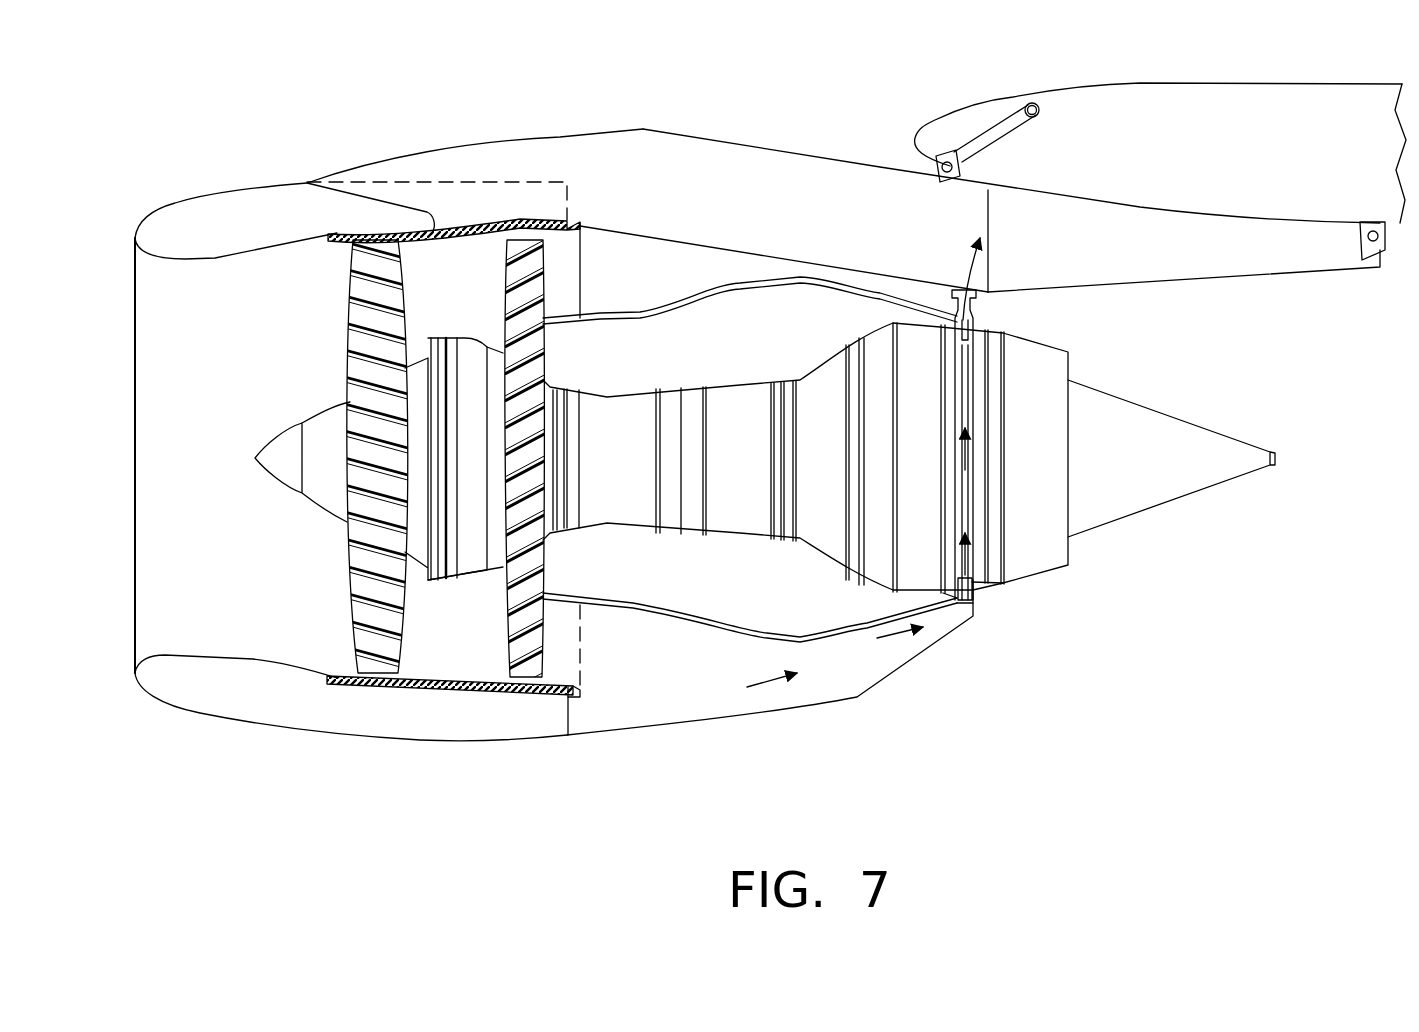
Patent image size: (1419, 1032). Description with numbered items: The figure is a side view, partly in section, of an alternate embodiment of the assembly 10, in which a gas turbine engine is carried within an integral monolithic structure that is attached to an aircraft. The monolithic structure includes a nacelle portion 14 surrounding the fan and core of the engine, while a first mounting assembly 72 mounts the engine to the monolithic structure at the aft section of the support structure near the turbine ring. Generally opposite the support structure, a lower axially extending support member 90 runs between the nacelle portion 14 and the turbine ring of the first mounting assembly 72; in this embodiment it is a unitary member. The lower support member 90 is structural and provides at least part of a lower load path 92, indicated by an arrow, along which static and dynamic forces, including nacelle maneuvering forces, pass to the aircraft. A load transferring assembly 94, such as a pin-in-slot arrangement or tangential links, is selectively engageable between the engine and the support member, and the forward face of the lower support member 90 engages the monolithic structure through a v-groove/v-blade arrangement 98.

The assembly 10 is at (292, 92).
The nacelle portion 14 is at (302, 708).
The first mounting assembly 72 is at (984, 323).
The lower axially extending support member 90 is at (703, 703).
The lower load path 92 is at (877, 637).
The load transferring assembly 94 is at (984, 595).
The v-groove/v-blade arrangement 98 is at (582, 709).